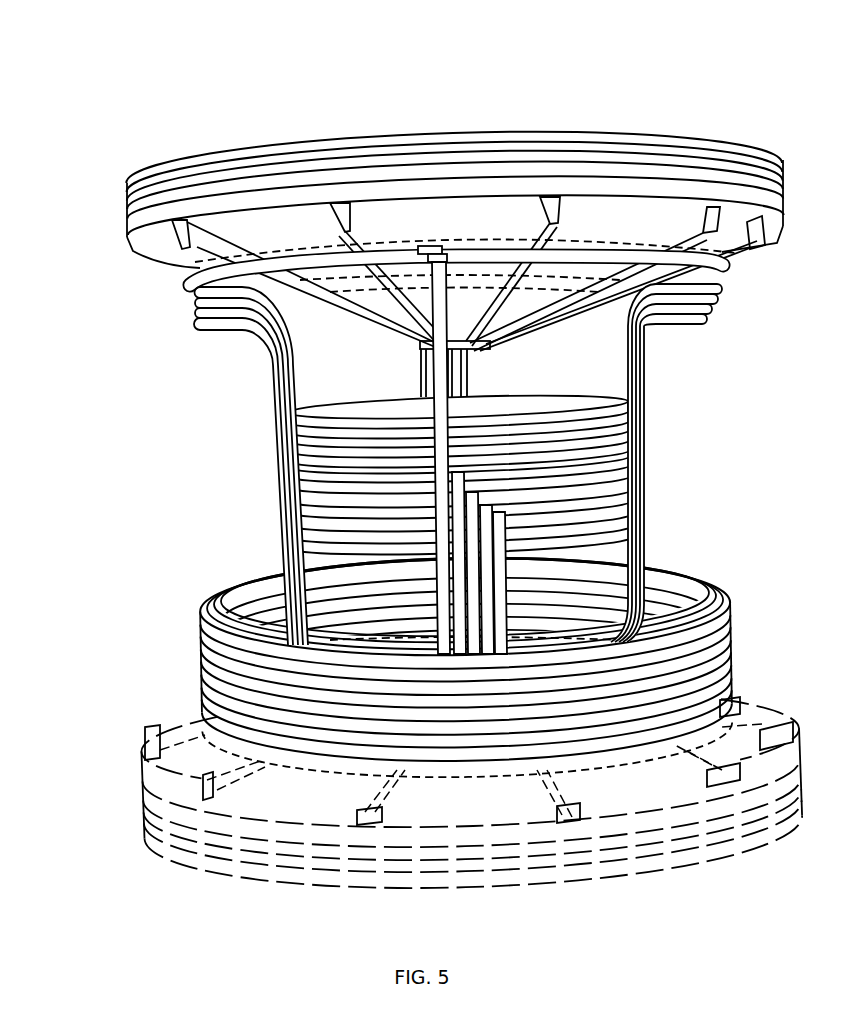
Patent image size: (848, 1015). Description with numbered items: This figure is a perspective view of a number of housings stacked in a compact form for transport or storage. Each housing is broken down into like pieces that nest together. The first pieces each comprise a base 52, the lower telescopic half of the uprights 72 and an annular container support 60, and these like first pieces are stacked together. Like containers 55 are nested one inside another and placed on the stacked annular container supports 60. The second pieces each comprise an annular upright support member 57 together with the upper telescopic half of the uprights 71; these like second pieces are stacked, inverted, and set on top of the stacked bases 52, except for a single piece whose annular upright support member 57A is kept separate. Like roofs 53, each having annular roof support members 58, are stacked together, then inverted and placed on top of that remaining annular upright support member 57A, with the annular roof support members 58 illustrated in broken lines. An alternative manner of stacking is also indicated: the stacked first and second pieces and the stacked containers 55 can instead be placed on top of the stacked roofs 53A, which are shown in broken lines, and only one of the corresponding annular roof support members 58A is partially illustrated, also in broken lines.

The base 52 is at (705, 673).
The roof 53 is at (645, 148).
The stacked roofs 53A is at (145, 818).
The container 55 is at (292, 447).
The annular upright support member 57 is at (708, 612).
The annular upright support member 57A is at (660, 253).
The annular roof support member 58 is at (358, 275).
The annular roof support member 58A is at (415, 642).
The annular container support 60 is at (290, 528).
The upper telescopic half of the uprights 71 is at (200, 327).
The lower telescopic half of the uprights 72 is at (470, 553).